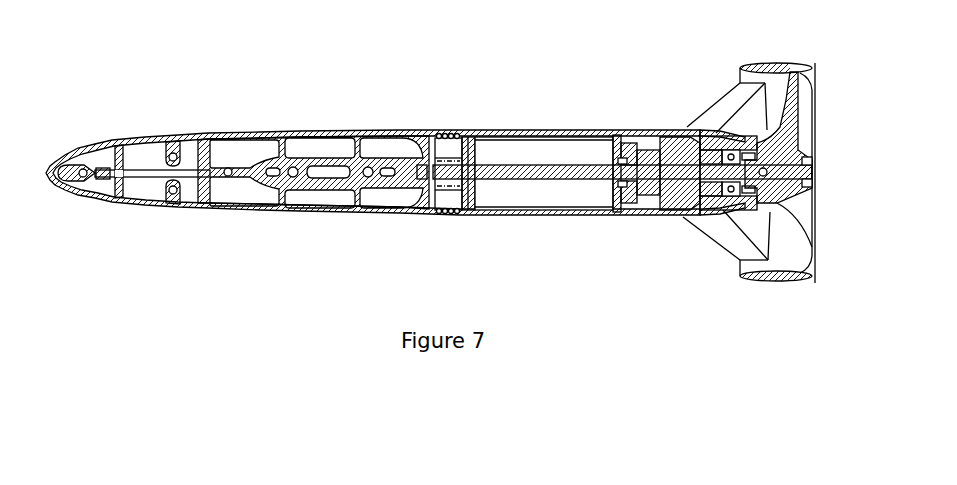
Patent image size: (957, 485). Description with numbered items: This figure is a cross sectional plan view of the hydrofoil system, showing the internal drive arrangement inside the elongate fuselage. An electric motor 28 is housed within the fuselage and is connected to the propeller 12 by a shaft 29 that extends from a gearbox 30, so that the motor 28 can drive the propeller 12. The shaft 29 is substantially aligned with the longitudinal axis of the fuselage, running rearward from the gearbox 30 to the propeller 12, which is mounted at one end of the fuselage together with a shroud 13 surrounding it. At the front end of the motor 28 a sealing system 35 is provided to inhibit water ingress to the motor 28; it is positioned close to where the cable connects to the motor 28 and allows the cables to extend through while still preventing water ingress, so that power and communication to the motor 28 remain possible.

The sealing system 35 is at (442, 108).
The electric motor 28 is at (525, 148).
The gearbox 30 is at (680, 158).
The propeller 12 is at (803, 107).
The shroud 13 is at (786, 264).
The shaft 29 is at (780, 176).